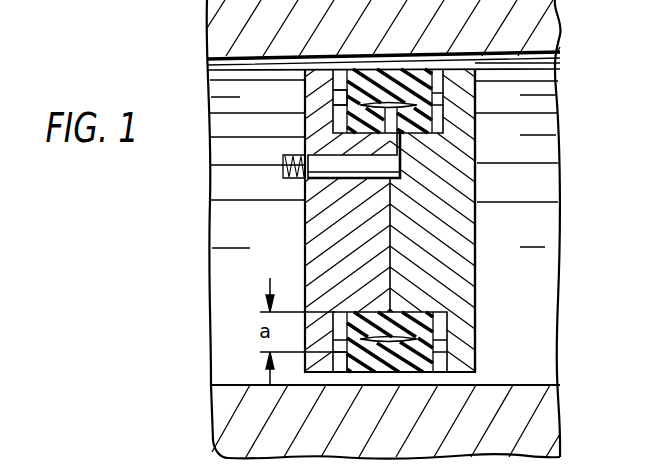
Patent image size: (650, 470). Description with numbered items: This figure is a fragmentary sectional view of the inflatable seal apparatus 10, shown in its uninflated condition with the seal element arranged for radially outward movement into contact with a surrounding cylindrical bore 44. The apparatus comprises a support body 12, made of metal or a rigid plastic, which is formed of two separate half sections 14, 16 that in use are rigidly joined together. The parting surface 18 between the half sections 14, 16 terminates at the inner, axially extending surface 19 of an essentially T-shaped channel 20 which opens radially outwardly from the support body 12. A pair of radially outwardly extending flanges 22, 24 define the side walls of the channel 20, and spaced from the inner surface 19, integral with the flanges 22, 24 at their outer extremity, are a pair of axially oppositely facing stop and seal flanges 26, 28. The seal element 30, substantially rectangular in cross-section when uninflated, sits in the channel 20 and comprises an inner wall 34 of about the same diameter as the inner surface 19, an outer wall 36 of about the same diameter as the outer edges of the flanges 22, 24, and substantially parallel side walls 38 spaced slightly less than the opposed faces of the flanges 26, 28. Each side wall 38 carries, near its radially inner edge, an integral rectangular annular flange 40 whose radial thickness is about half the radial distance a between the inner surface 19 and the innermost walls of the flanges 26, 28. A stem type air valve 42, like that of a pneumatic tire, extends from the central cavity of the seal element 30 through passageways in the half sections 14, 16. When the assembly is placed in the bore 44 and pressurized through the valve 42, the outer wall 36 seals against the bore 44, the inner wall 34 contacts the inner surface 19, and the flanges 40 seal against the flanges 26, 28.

The inflatable seal apparatus 10 is at (487, 202).
The support body 12 is at (305, 237).
The half section 14 is at (332, 248).
The half section 16 is at (455, 253).
The parting surface 18 is at (390, 232).
The inner surface 19 is at (407, 143).
The T-shaped channel 20 is at (458, 348).
The flange 22 is at (457, 107).
The flange 24 is at (318, 98).
The stop and seal flange 26 is at (442, 82).
The stop and seal flange 28 is at (334, 82).
The seal element 30 is at (420, 370).
The inner wall 34 is at (425, 327).
The outer wall 36 is at (400, 366).
The side wall 38 is at (337, 360).
The annular flange 40 is at (455, 112).
The stem type air valve 42 is at (297, 180).
The cylindrical bore 44 is at (530, 54).